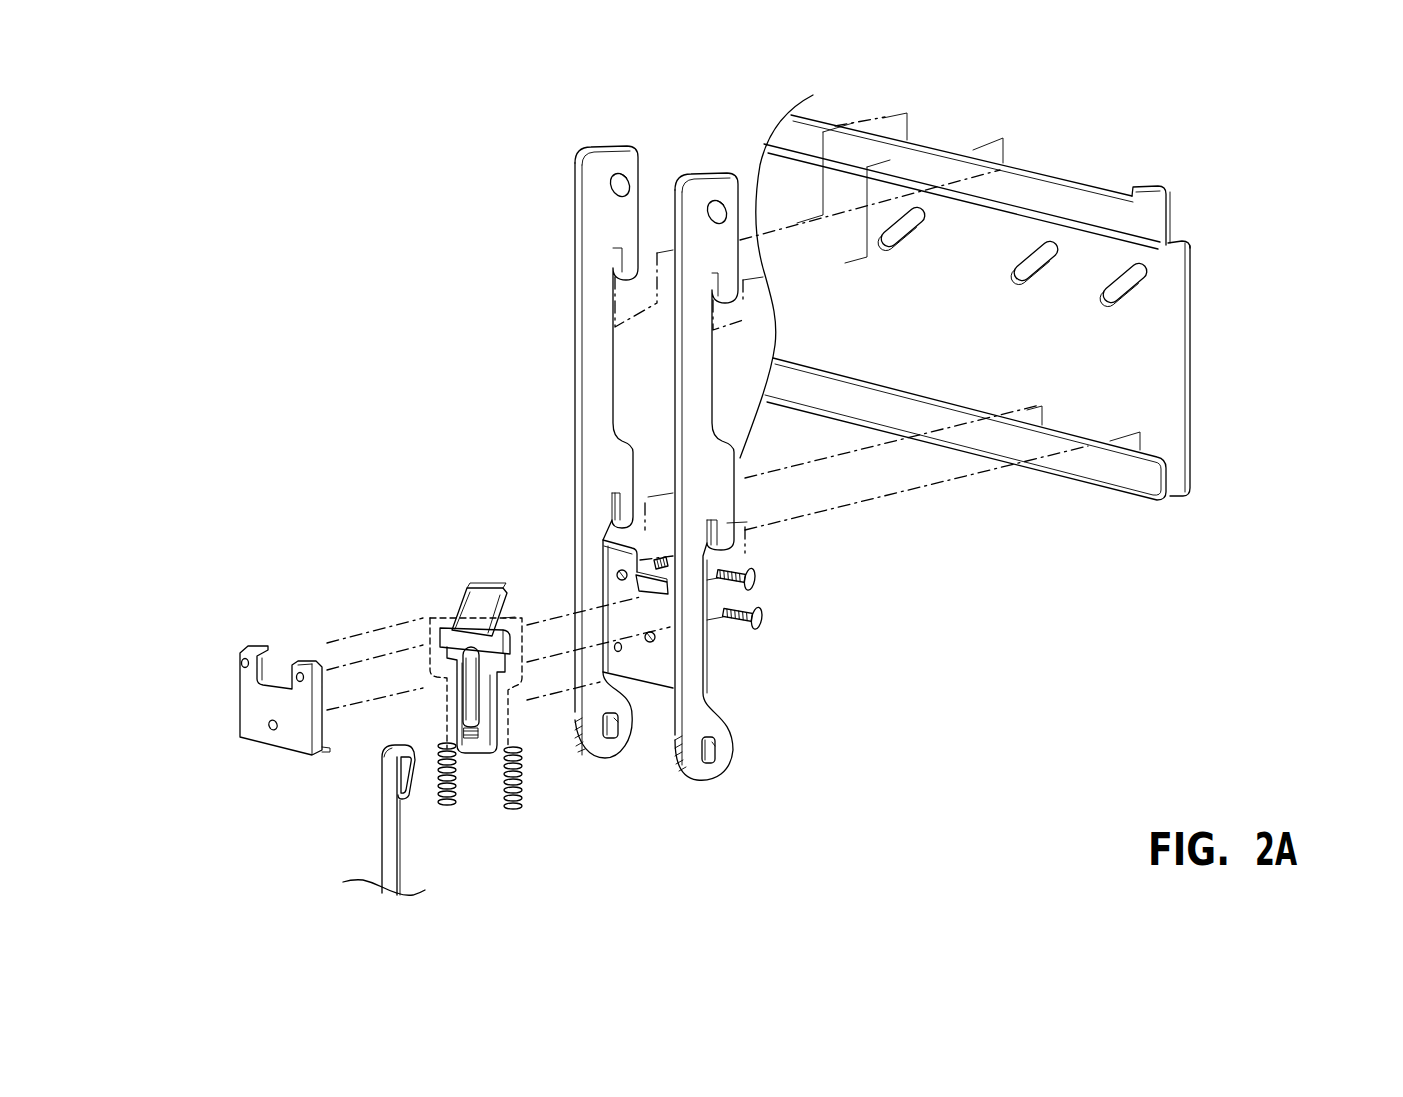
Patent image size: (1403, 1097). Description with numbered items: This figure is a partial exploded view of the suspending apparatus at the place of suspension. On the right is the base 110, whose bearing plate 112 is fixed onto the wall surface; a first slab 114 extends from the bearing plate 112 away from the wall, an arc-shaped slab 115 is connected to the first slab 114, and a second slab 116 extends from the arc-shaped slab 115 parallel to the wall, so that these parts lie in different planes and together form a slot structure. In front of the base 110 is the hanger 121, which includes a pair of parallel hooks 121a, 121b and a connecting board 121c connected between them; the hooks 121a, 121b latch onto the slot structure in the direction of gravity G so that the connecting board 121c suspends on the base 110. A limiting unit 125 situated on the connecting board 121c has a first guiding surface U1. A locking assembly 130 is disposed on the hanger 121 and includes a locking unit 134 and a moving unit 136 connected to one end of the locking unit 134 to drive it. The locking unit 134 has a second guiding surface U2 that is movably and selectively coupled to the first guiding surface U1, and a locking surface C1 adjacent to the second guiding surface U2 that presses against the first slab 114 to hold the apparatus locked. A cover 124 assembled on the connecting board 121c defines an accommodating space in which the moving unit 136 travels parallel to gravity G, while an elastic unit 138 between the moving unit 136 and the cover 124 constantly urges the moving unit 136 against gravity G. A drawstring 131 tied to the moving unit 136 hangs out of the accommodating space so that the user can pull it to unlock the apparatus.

The base 110 is at (1063, 312).
The bearing plate 112 is at (1190, 368).
The first slab 114 is at (1172, 235).
The arc-shaped slab 115 is at (1152, 254).
The second slab 116 is at (1158, 188).
The hanger 121 is at (643, 517).
The hook 121a is at (612, 748).
The hook 121b is at (712, 772).
The connecting board 121c is at (653, 672).
The cover 124 is at (253, 702).
The limiting unit 125 is at (592, 492).
The locking assembly 130 is at (337, 632).
The drawstring 131 is at (383, 833).
The locking unit 134 is at (449, 629).
The moving unit 136 is at (430, 615).
The elastic unit 138 is at (522, 808).
The locking surface C1 is at (485, 578).
The first guiding surface U1 is at (648, 574).
The second guiding surface U2 is at (510, 618).
The gravity G is at (1085, 538).